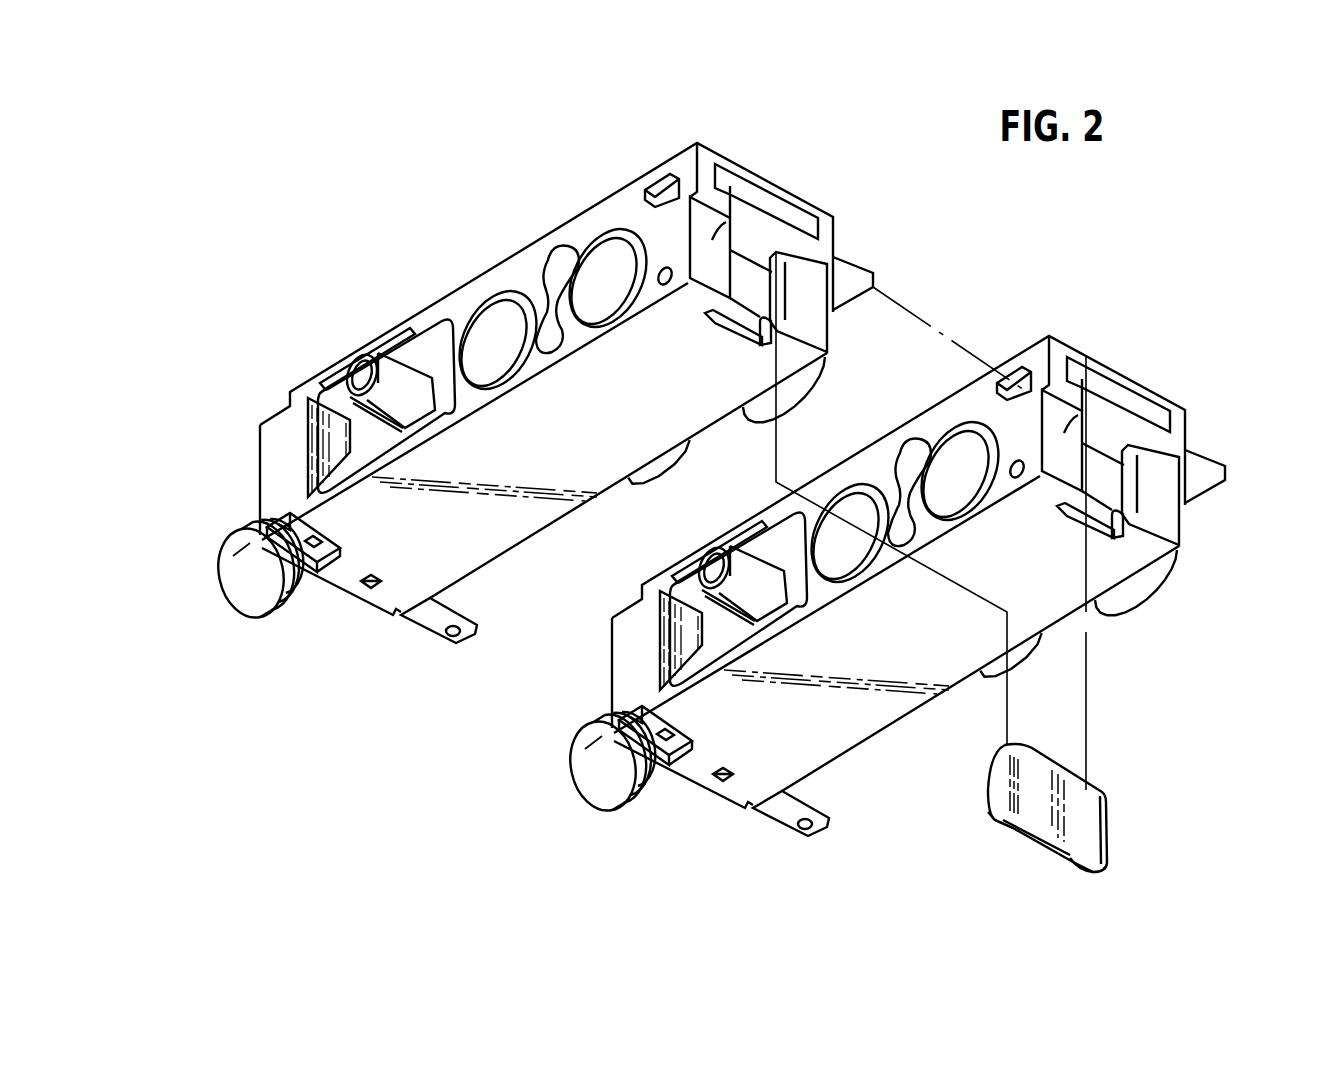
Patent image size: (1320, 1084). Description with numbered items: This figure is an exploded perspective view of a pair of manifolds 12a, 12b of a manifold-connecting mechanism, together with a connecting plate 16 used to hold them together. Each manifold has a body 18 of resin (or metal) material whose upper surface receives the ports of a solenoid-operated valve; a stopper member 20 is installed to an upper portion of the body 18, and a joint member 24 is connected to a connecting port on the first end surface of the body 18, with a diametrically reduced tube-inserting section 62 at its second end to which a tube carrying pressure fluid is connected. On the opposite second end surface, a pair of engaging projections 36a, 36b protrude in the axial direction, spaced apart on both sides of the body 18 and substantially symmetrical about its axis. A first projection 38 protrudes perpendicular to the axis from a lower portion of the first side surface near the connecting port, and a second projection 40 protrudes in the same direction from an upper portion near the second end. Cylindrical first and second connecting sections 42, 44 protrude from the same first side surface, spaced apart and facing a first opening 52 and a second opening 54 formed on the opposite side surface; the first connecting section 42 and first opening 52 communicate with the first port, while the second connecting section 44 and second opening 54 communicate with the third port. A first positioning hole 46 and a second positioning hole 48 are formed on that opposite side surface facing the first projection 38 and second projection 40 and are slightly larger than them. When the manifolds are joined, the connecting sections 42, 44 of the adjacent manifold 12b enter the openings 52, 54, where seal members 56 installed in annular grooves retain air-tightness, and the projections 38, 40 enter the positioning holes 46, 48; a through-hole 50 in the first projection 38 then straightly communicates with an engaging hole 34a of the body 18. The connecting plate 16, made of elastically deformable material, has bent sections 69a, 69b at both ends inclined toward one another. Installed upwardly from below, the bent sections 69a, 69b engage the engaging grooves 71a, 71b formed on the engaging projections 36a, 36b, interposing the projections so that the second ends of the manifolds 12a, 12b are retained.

The manifold 12a is at (808, 198).
The manifold 12b is at (1149, 382).
The connecting plate 16 is at (1106, 786).
The body 18 is at (549, 504).
The stopper member 20 is at (770, 196).
The joint member 24 is at (258, 621).
The engaging hole 34a is at (313, 547).
The engaging projection 36a is at (720, 185).
The engaging projection 36b is at (805, 326).
The first projection 38 is at (423, 617).
The second projection 40 is at (846, 260).
The first connecting section 42 is at (785, 404).
The second connecting section 44 is at (663, 471).
The first positioning hole 46 is at (266, 535).
The second positioning hole 48 is at (670, 180).
The through-hole 50 is at (455, 637).
The first opening 52 is at (617, 303).
The second opening 54 is at (513, 357).
The seal member 56 is at (613, 262).
The tube-inserting section 62 is at (228, 598).
The bent section 69a is at (986, 806).
The bent section 69b is at (1068, 864).
The engaging groove 71a is at (762, 324).
The engaging groove 71b is at (715, 318).